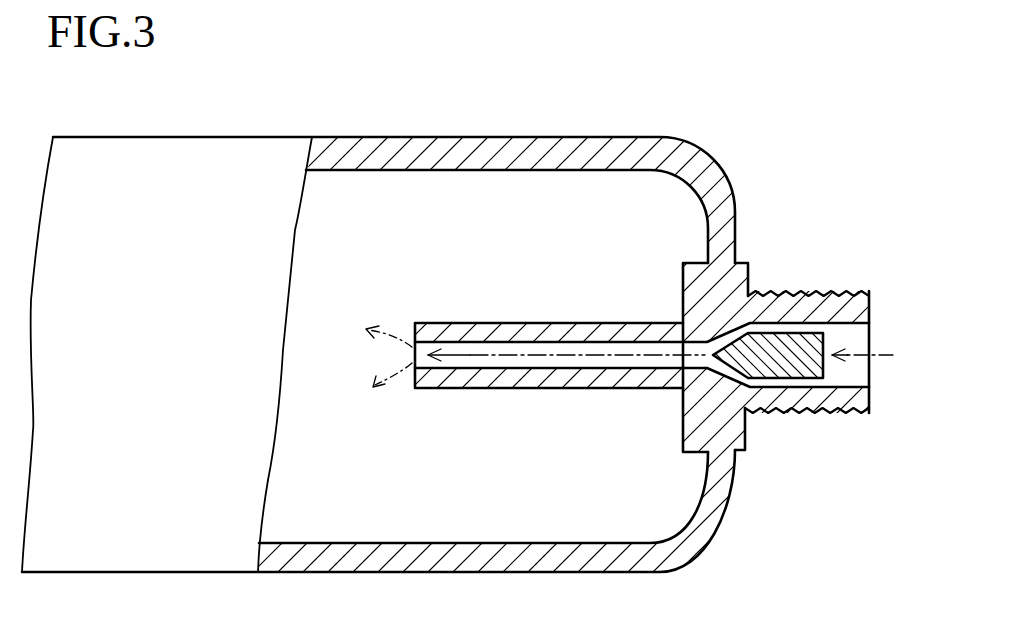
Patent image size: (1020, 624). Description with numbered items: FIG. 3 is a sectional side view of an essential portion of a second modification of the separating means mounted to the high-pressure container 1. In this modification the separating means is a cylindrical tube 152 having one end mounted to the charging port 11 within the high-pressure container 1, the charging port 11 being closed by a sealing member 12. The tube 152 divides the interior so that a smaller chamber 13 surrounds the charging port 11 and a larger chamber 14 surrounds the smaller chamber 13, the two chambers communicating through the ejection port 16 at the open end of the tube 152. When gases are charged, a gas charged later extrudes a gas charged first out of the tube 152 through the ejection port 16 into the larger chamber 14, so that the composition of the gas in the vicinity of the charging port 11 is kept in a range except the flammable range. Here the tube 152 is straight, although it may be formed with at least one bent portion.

The high-pressure container 1 is at (510, 310).
The charging port 11 is at (714, 307).
The sealing member 12 is at (764, 357).
The smaller chamber 13 is at (490, 344).
The larger chamber 14 is at (352, 265).
The cylindrical tube 152 is at (598, 318).
The ejection port 16 is at (412, 369).